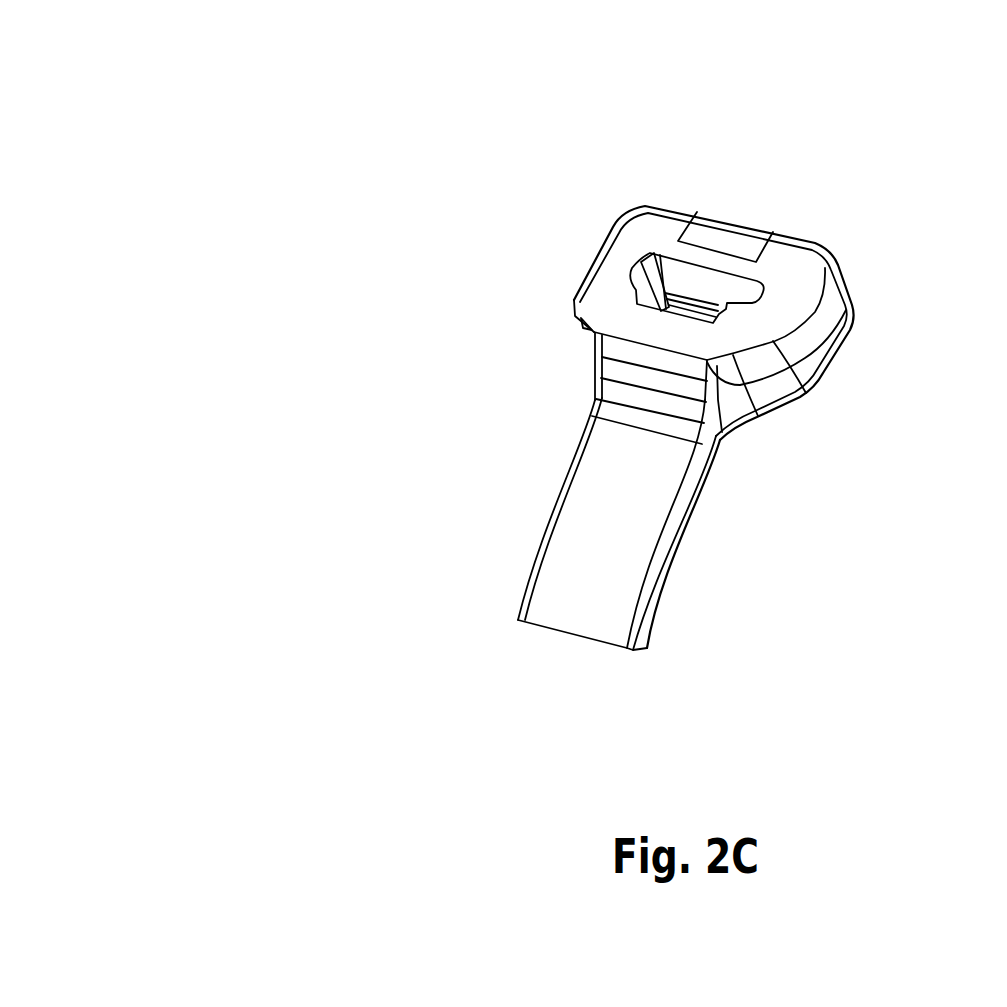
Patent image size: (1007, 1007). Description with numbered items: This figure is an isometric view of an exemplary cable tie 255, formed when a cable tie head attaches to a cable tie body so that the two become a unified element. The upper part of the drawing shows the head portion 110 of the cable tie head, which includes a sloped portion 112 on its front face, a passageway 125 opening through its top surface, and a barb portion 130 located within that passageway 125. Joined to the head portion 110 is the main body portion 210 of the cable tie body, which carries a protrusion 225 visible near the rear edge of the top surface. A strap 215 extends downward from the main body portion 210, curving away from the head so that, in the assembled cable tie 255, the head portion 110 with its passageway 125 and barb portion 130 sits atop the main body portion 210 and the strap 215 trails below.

The cable tie 255 is at (226, 42).
The head portion 110 is at (851, 258).
The protrusion 225 is at (729, 232).
The passageway 125 is at (688, 276).
The barb portion 130 is at (678, 294).
The sloped portion 112 is at (623, 361).
The main body portion 210 is at (822, 362).
The strap 215 is at (568, 501).